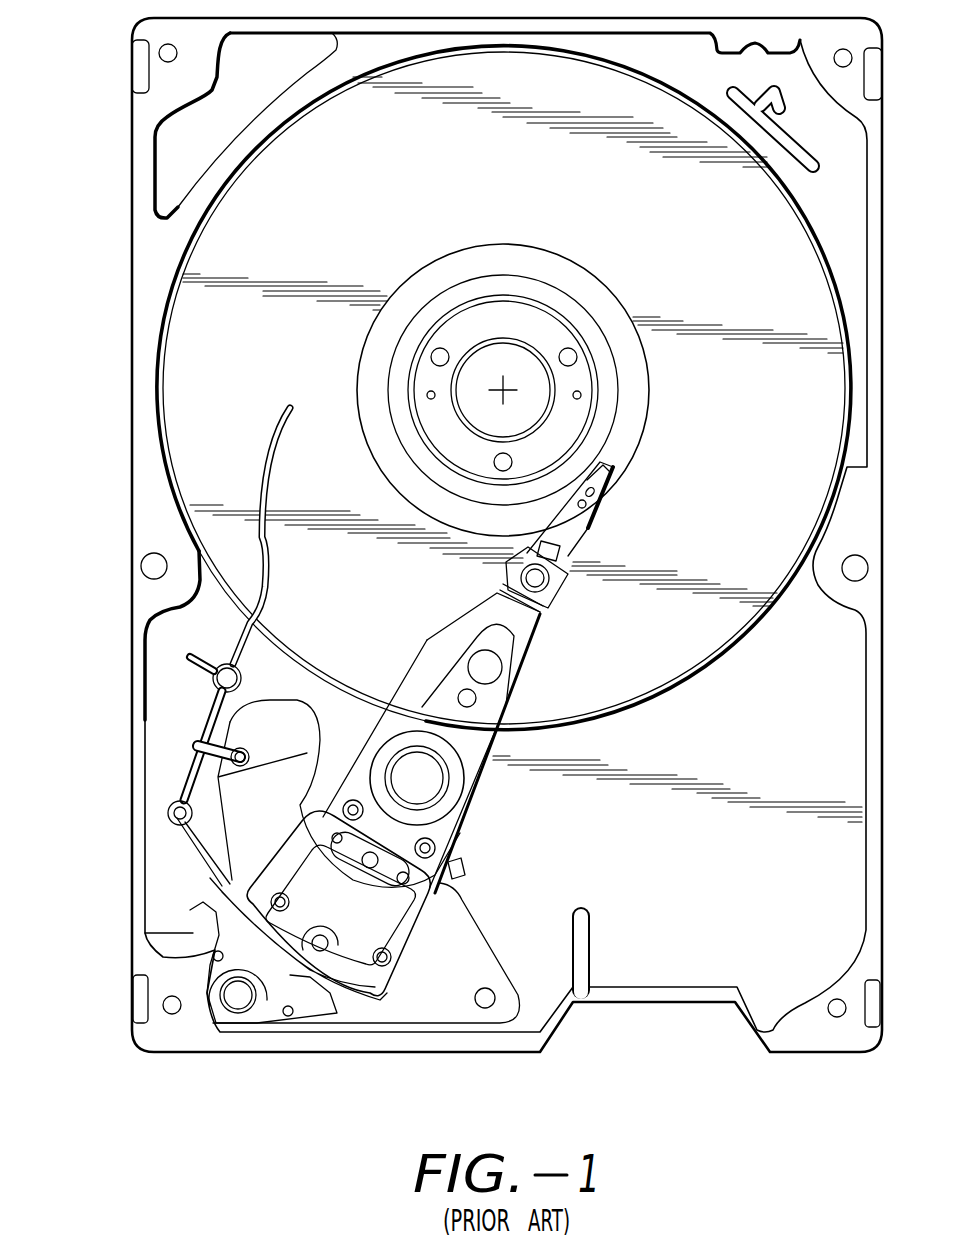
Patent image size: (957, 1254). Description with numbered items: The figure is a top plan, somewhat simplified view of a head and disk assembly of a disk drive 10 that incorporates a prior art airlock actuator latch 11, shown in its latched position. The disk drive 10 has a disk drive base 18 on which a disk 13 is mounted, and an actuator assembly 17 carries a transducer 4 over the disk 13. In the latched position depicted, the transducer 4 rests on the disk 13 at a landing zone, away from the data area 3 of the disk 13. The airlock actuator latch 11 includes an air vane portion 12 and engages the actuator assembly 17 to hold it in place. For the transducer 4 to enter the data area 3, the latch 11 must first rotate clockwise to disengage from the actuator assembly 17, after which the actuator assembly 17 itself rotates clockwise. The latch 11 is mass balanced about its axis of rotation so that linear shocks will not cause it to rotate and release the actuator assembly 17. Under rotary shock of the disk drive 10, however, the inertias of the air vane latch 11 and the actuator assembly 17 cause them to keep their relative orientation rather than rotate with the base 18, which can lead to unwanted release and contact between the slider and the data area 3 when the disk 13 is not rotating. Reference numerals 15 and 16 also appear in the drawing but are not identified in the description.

The disk drive 10 is at (92, 724).
The data area 3 is at (522, 449).
The transducer 4 is at (612, 480).
The airlock actuator latch 11 is at (190, 727).
The air vane portion 12 is at (268, 450).
The disk 13 is at (720, 686).
The pivot pin 15 is at (241, 676).
The voice coil 16 is at (276, 830).
The actuator assembly 17 is at (498, 858).
The disk drive base 18 is at (790, 872).